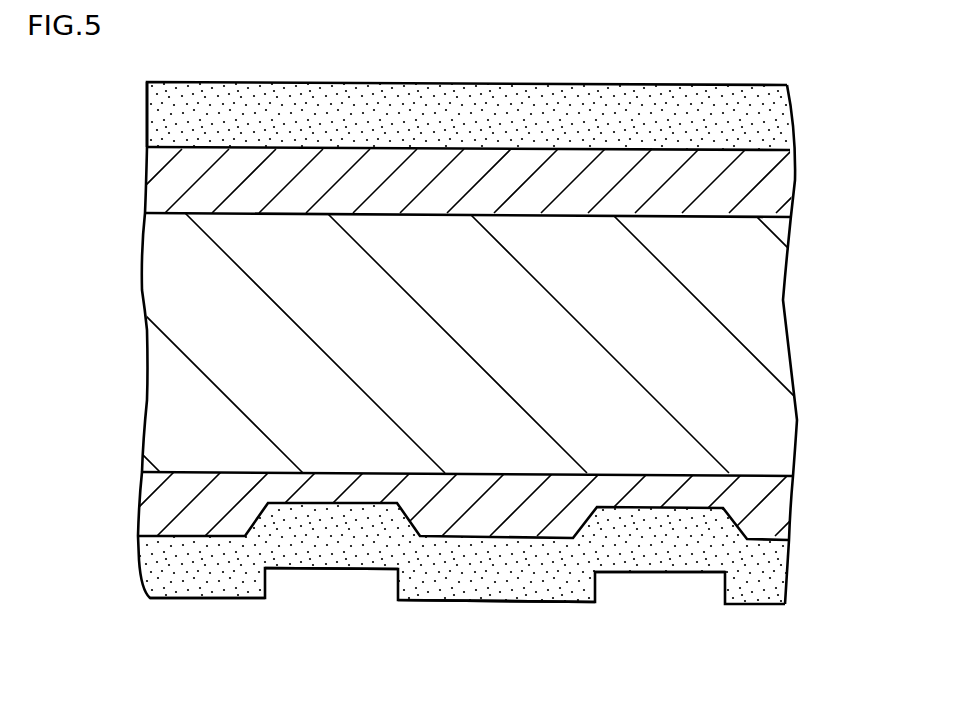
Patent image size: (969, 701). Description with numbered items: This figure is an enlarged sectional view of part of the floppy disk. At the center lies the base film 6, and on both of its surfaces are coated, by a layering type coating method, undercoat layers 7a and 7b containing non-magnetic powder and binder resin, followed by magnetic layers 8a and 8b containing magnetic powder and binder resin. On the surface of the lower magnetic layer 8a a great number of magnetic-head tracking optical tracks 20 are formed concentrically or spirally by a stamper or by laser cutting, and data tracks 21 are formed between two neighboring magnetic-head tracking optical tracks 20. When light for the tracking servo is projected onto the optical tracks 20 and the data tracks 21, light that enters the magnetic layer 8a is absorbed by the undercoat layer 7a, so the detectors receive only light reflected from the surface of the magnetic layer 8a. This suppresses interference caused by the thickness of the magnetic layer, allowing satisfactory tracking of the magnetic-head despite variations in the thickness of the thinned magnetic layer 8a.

The magnetic layer 8b is at (782, 127).
The undercoat layer 7b is at (787, 183).
The base film 6 is at (777, 347).
The undercoat layer 7a is at (778, 508).
The magnetic layer 8a is at (775, 577).
The magnetic-head tracking optical tracks 20 is at (331, 585).
The data tracks 21 is at (200, 592).